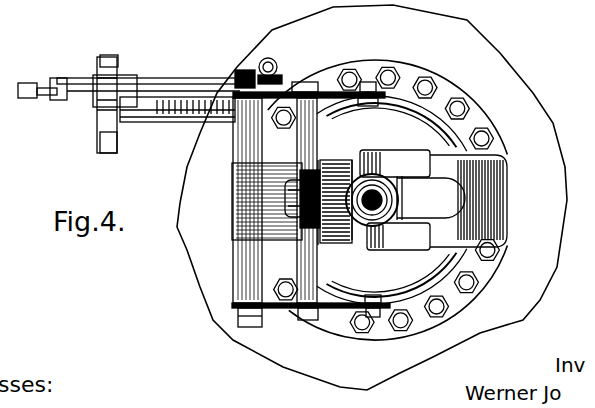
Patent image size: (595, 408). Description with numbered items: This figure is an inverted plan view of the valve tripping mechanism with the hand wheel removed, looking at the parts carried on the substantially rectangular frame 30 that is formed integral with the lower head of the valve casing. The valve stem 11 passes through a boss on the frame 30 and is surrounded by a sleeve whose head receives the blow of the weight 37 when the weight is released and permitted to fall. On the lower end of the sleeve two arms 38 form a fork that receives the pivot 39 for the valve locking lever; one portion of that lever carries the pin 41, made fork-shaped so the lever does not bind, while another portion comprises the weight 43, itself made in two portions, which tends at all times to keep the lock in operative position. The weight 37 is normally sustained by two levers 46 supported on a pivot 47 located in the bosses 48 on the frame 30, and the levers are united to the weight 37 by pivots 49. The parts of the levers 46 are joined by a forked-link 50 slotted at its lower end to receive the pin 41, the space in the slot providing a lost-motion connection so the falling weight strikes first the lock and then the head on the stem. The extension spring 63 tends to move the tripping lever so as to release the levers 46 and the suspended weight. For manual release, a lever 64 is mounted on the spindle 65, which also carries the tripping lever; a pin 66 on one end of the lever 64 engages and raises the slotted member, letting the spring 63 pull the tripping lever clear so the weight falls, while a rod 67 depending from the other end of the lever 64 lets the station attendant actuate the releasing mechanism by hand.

The stem 11 is at (365, 246).
The frame 30 is at (507, 197).
The weight 37 is at (393, 117).
The arms 38 is at (290, 190).
The pivot 39 is at (320, 182).
The pin 41 is at (318, 175).
The weight 43 is at (410, 153).
The levers 46 is at (330, 92).
The pivot 47 is at (248, 330).
The bosses 48 is at (237, 267).
The pivots 49 is at (368, 82).
The forked-link 50 is at (318, 140).
The extension spring 63 is at (182, 122).
The lever 64 is at (160, 78).
The spindle 65 is at (100, 150).
The pin 66 is at (53, 98).
The rod 67 is at (262, 62).